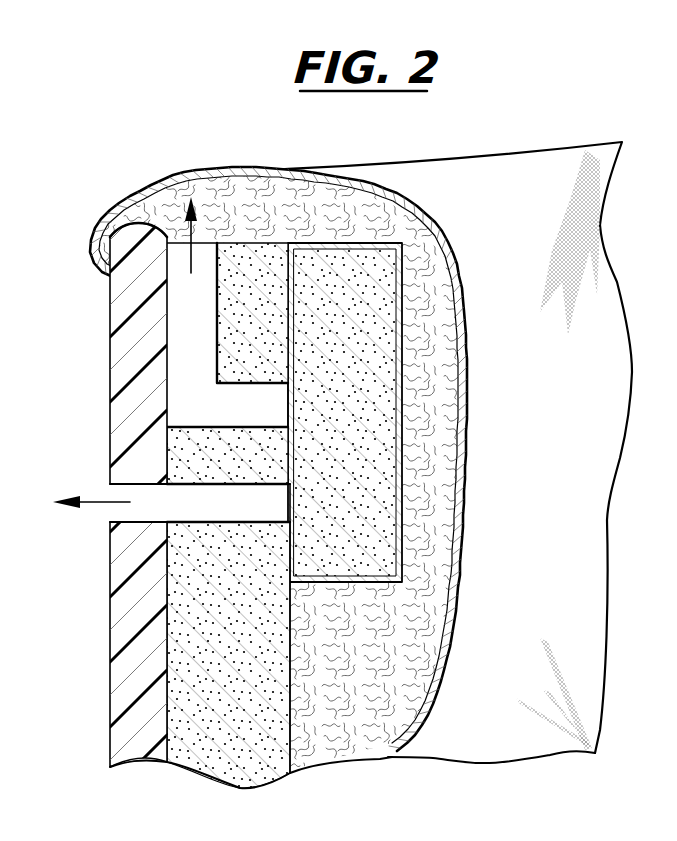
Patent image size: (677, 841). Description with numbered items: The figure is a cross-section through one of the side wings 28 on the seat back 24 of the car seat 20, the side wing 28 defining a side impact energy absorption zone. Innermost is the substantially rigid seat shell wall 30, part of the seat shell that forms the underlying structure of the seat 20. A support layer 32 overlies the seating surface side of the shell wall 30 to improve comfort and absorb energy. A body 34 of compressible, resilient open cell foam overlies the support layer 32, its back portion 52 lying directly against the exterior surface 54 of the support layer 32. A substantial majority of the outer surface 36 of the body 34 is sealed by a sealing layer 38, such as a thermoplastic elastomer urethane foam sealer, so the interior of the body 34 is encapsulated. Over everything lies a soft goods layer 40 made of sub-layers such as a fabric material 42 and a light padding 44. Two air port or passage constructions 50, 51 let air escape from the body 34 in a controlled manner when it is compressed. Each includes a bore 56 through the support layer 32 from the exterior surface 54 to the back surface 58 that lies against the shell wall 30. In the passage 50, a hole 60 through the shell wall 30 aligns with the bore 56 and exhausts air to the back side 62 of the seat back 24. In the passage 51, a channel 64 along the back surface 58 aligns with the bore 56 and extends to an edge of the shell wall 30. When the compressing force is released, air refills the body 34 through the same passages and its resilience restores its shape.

The car seat 20 is at (197, 573).
The seat back 24 is at (550, 525).
The side wing 28 is at (0, 130).
The seat shell wall 30 is at (128, 333).
The support layer 32 is at (200, 628).
The body 34 is at (327, 267).
The outer surface 36 is at (398, 333).
The sealing layer 38 is at (400, 377).
The soft goods layer 40 is at (440, 215).
The fabric material 42 is at (240, 172).
The light padding 44 is at (272, 203).
The air port or passage 50 is at (180, 508).
The air port or passage 51 is at (185, 312).
The back portion 52 is at (290, 363).
The exterior surface 54 is at (290, 620).
The bore 56 is at (245, 403).
The back surface 58 is at (167, 582).
The hole 60 is at (125, 494).
The back side 62 is at (107, 673).
The channel 64 is at (197, 285).